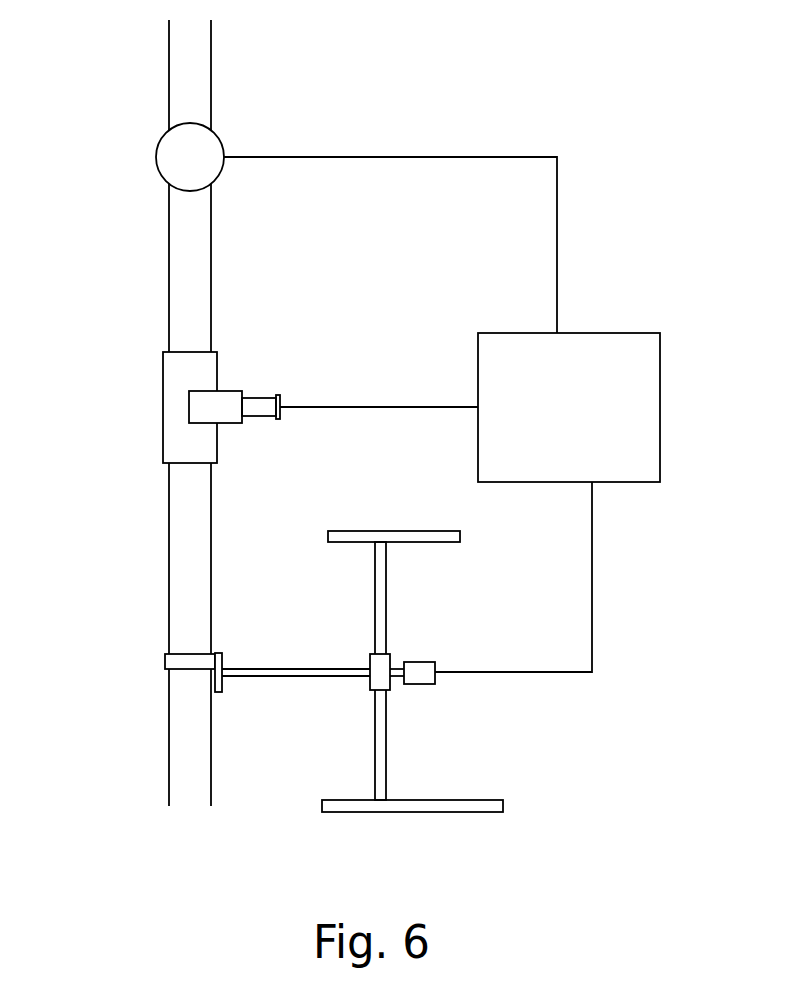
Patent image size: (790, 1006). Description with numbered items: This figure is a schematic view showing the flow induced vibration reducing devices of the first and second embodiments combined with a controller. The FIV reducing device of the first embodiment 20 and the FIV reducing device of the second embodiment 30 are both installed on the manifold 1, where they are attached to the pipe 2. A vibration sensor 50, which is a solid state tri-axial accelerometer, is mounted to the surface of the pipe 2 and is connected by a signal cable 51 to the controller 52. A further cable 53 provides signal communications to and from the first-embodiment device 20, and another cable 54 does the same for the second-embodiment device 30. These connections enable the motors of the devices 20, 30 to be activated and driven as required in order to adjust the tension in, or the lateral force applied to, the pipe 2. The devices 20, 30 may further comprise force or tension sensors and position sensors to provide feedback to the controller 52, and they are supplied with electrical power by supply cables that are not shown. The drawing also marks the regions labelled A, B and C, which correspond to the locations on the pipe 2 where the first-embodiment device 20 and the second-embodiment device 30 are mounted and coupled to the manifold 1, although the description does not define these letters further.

The manifold 1 is at (430, 769).
The pipe 2 is at (198, 60).
The FIV reducing device of the first embodiment 20 is at (240, 370).
The FIV reducing device of the second embodiment 30 is at (280, 690).
The vibration sensor 50 is at (173, 150).
The signal cable 51 is at (452, 155).
The controller 52 is at (560, 415).
The cable 53 is at (340, 407).
The cable 54 is at (592, 595).
The carriage block A is at (140, 410).
The clamp B is at (148, 656).
The coupling block C is at (358, 648).